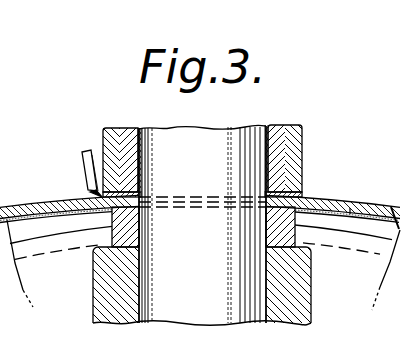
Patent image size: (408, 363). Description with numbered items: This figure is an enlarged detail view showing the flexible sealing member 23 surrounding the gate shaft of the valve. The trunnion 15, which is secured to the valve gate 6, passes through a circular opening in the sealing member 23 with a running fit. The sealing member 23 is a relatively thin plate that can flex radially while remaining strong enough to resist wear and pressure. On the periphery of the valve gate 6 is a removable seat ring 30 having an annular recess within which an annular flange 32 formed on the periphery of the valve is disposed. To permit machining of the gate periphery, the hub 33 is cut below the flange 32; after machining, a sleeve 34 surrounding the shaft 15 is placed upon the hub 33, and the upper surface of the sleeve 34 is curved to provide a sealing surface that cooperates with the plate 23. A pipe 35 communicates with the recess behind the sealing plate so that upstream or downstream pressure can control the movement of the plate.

The valve gate 6 is at (203, 265).
The trunnion 15 is at (224, 143).
The sealing member 23 is at (302, 192).
The removable seat ring 30 is at (63, 222).
The annular flange 32 is at (39, 252).
The hub 33 is at (301, 313).
The sleeve 34 is at (304, 233).
The pipe 35 is at (93, 152).